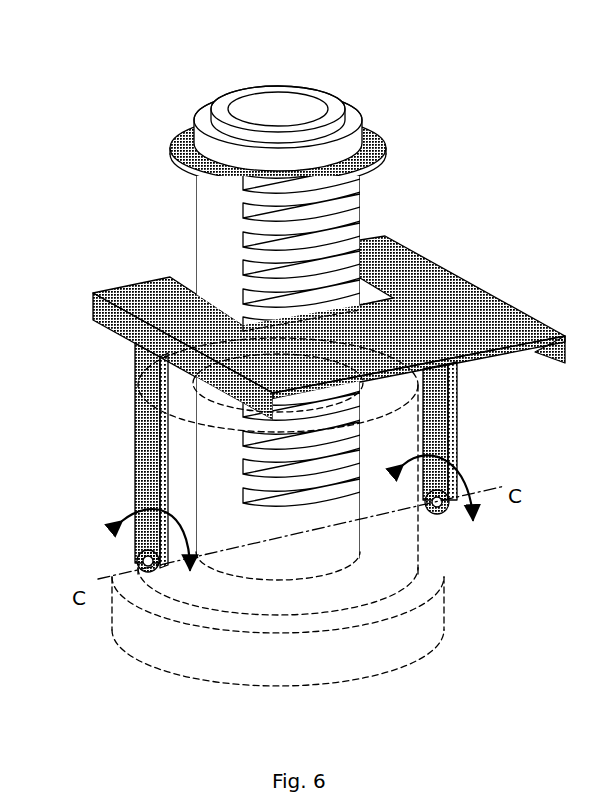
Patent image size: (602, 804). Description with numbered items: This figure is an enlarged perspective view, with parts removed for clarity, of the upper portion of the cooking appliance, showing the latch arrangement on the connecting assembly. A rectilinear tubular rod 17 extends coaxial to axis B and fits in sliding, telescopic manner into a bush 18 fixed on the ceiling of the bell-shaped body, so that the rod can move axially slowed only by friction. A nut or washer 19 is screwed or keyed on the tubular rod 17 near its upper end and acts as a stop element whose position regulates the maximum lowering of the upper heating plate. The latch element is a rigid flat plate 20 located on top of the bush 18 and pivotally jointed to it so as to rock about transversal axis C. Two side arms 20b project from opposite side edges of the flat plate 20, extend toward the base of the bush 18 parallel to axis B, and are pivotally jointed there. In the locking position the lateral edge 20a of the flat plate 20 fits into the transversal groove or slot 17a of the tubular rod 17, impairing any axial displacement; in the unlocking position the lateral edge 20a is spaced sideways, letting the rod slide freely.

The tubular rod 17 is at (335, 110).
The transversal groove or slot 17a is at (324, 265).
The bush 18 is at (213, 600).
The nut or washer 19 is at (183, 148).
The flat plate 20 is at (160, 305).
The lateral edge 20a is at (315, 318).
The side arms 20b is at (152, 453).